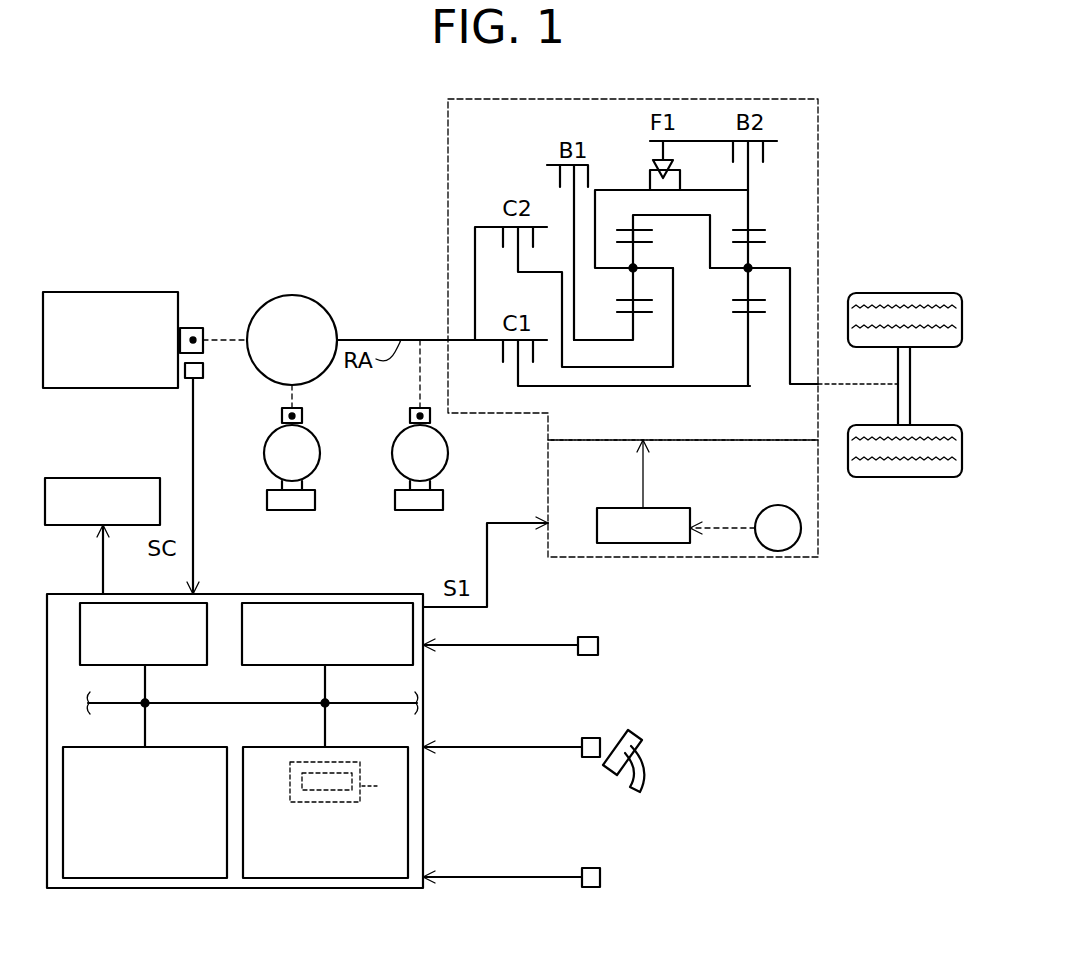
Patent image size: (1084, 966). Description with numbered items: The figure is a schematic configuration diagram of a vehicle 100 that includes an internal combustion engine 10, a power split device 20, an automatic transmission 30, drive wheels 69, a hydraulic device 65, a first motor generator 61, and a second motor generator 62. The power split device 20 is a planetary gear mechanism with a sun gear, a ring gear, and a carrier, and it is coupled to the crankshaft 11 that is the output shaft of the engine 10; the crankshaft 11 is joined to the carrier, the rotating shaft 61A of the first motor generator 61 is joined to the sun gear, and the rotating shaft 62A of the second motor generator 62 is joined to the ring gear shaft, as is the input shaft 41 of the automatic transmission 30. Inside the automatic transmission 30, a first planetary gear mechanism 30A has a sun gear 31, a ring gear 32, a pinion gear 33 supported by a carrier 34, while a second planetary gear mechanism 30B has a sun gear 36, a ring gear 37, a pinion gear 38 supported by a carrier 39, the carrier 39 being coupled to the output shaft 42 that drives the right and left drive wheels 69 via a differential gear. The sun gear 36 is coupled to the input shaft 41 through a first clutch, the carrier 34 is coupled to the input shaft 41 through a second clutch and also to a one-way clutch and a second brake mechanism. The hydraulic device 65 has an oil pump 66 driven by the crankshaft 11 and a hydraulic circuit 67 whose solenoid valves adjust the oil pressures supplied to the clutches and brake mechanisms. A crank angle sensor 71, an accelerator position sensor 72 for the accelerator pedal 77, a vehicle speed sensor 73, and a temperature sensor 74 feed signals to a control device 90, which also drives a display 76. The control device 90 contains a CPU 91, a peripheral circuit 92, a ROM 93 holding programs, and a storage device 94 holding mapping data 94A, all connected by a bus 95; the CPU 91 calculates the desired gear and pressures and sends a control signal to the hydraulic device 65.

The vehicle 100 is at (208, 186).
The internal combustion engine 10 is at (145, 292).
The crankshaft 11 is at (188, 328).
The crank angle sensor 71 is at (187, 390).
The power split device 20 is at (333, 312).
The input shaft 41 is at (463, 343).
The first motor generator 61 is at (266, 460).
The rotating shaft 61A is at (302, 413).
The second motor generator 62 is at (448, 450).
The rotating shaft 62A is at (430, 417).
The automatic transmission 30 is at (448, 124).
The first planetary gear mechanism 30A is at (680, 328).
The second planetary gear mechanism 30B is at (792, 230).
The sun gear 31 is at (588, 341).
The ring gear 32 is at (687, 215).
The pinion gear 33 is at (640, 252).
The carrier 34 is at (620, 190).
The sun gear 36 is at (752, 362).
The ring gear 37 is at (750, 200).
The pinion gear 38 is at (750, 255).
The carrier 39 is at (792, 290).
The output shaft 42 is at (803, 387).
The drive wheels 69 is at (900, 293).
The hydraulic device 65 is at (748, 557).
The oil pump 66 is at (778, 505).
The hydraulic circuit 67 is at (673, 505).
The display 76 is at (70, 478).
The control device 90 is at (65, 594).
The central processing unit 91 is at (163, 668).
The peripheral circuit 92 is at (330, 603).
The read-only memory 93 is at (145, 879).
The storage device 94 is at (325, 879).
The mapping data 94A is at (353, 761).
The bus 95 is at (340, 702).
The accelerator position sensor 72 is at (591, 738).
The vehicle speed sensor 73 is at (588, 637).
The temperature sensor 74 is at (591, 868).
The accelerator pedal 77 is at (625, 728).